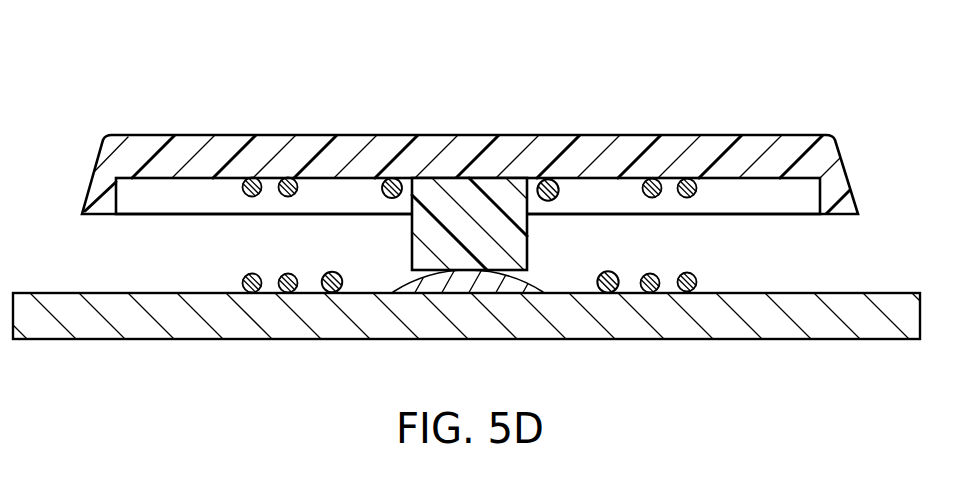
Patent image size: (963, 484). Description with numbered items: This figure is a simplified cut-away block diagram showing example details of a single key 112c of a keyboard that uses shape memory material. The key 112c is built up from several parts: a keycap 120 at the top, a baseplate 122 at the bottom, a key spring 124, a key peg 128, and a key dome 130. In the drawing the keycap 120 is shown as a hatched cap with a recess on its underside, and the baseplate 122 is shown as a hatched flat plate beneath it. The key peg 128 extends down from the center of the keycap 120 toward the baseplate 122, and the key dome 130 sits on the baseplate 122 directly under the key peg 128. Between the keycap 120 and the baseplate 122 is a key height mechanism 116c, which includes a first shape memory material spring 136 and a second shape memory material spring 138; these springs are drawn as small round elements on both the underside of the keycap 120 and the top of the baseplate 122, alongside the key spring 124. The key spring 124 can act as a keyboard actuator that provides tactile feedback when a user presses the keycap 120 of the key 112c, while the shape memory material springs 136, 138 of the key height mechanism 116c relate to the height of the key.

The key 112c is at (750, 81).
The key height mechanism 116c is at (797, 274).
The keycap 120 is at (190, 135).
The baseplate 122 is at (143, 330).
The key spring 124 is at (394, 178).
The key peg 128 is at (528, 262).
The key dome 130 is at (490, 278).
The first shape memory material spring 136 is at (288, 198).
The second shape memory material spring 138 is at (249, 198).